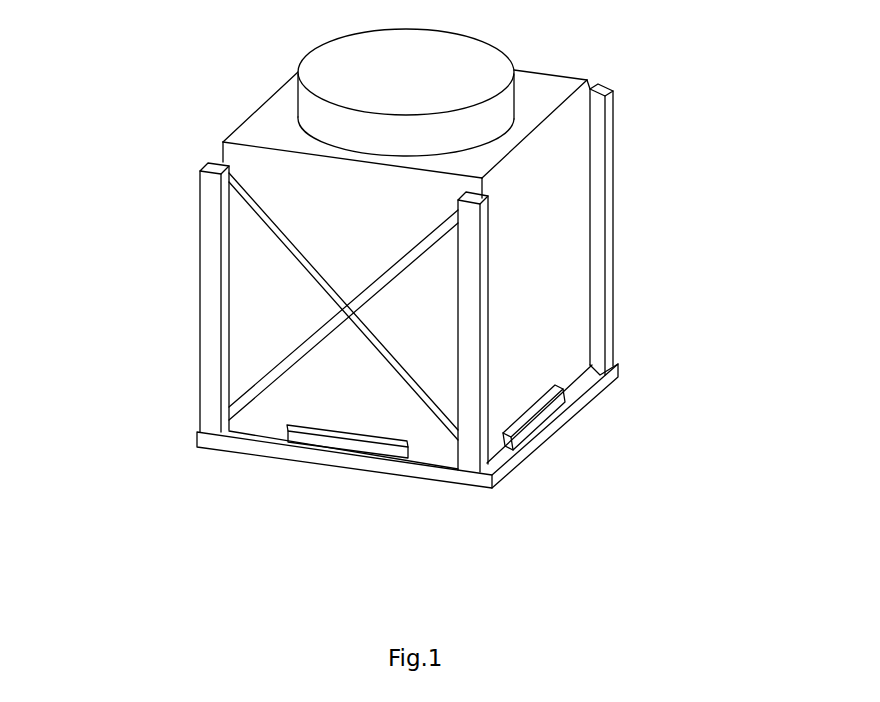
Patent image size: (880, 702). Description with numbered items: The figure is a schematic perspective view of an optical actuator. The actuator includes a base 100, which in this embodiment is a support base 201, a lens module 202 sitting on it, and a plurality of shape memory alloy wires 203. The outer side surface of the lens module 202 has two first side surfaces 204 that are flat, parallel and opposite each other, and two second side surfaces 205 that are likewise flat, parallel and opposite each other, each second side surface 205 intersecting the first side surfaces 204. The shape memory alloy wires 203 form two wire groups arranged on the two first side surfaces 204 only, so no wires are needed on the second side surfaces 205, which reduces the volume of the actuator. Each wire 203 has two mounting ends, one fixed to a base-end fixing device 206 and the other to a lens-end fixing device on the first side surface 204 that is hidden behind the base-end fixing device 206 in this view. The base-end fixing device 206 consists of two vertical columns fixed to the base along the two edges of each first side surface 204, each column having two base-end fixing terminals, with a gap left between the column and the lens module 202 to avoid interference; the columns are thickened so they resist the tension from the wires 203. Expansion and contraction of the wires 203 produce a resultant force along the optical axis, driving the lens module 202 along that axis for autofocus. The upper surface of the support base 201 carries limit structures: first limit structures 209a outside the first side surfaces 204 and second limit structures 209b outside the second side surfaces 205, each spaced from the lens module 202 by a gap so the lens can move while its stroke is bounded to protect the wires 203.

The base 100 is at (520, 458).
The support base 201 is at (570, 412).
The lens module 202 is at (500, 143).
The shape memory alloy wires 203 is at (377, 353).
The first side surfaces 204 is at (250, 248).
The second side surfaces 205 is at (530, 292).
The base-end fixing device 206 is at (213, 382).
The first limit structures 209a is at (340, 443).
The second limit structures 209b is at (548, 440).